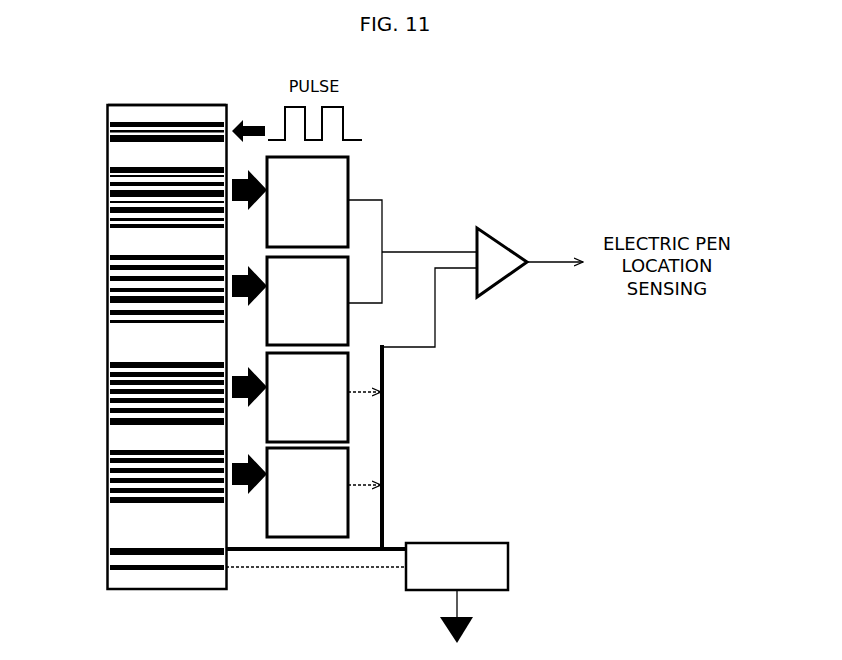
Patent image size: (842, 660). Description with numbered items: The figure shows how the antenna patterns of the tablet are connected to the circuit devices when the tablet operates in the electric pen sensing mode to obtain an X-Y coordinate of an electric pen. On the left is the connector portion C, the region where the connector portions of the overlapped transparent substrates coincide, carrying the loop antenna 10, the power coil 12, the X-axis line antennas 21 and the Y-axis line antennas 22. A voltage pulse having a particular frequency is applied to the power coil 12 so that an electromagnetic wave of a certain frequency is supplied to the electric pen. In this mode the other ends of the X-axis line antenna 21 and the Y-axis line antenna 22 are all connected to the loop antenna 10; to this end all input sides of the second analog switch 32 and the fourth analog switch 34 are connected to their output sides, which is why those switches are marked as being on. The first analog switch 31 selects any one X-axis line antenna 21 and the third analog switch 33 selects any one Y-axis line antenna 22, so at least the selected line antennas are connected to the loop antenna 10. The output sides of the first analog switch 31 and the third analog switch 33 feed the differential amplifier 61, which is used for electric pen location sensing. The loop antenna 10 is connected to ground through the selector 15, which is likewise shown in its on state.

The loop antenna 10 is at (107, 568).
The power coil 12 is at (107, 140).
The Y-axis line antenna 22 is at (107, 206).
The X-axis line antenna 21 is at (107, 298).
The third analog switch 33 is at (349, 176).
The first analog switch 31 is at (351, 262).
The second analog switch 32 is at (352, 420).
The fourth analog switch 34 is at (352, 515).
The differential amplifier 61 is at (502, 243).
The selector 15 is at (510, 566).
The connector portion C is at (210, 104).